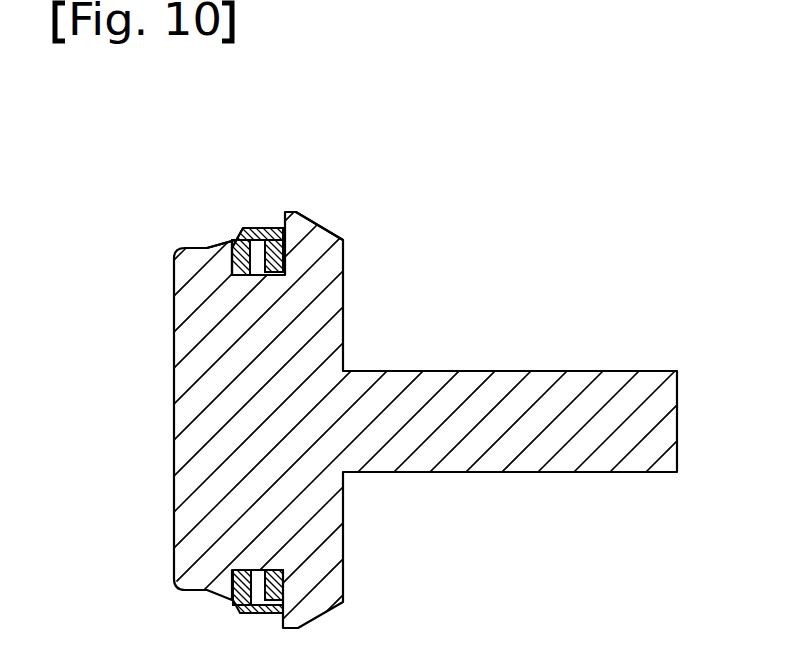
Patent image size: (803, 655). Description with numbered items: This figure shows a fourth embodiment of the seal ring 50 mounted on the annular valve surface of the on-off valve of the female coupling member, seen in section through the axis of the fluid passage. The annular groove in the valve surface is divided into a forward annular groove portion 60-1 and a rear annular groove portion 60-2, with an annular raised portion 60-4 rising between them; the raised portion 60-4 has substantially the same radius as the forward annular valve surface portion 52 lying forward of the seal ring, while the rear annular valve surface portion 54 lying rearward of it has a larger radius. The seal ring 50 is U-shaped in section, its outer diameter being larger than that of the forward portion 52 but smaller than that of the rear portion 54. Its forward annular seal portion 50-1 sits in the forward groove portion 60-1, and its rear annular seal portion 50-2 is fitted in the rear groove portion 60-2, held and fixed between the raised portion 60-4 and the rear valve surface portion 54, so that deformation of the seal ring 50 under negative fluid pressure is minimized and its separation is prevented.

The seal ring 50 is at (262, 230).
The forward annular seal portion 50-1 is at (240, 231).
The rear annular seal portion 50-2 is at (285, 252).
The forward annular valve surface portion 52 is at (229, 242).
The rear annular valve surface portion 54 is at (290, 212).
The forward annular groove portion 60-1 is at (236, 262).
The rear annular groove portion 60-2 is at (278, 273).
The annular raised portion 60-4 is at (250, 229).